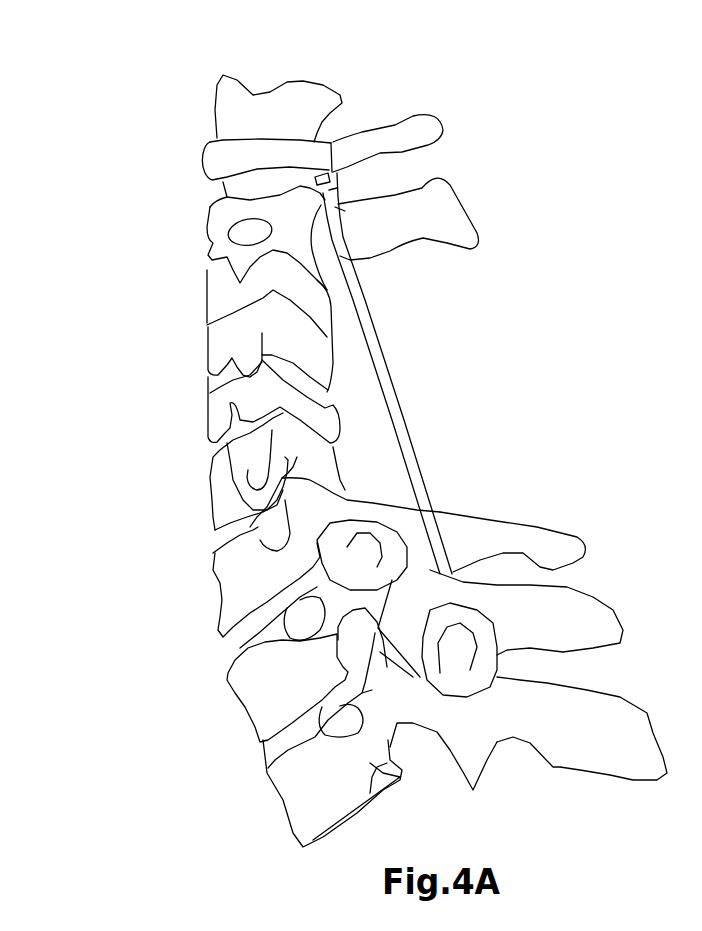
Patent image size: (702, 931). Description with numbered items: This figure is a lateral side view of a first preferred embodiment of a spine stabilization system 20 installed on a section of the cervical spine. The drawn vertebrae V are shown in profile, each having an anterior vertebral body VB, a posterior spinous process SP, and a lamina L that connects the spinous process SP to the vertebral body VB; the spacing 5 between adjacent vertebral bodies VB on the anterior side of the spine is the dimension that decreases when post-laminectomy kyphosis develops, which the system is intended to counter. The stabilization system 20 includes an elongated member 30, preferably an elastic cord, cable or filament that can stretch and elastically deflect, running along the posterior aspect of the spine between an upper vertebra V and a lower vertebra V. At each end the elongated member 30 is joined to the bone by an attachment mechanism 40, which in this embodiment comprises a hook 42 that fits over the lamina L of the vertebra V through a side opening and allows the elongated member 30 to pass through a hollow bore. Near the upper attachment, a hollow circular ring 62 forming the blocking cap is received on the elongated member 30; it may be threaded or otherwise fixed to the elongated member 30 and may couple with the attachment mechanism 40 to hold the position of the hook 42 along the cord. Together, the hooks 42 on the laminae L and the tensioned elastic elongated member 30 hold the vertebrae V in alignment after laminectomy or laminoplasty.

The spine stabilization system 20 is at (417, 308).
The elongated member 30 is at (417, 483).
The hollow circular ring 62 is at (336, 172).
The hook 42 is at (338, 192).
The attachment mechanism 40 is at (440, 136).
The spacing 5 is at (210, 262).
The vertebra V is at (217, 240).
The vertebral body VB is at (220, 220).
The spinous process SP is at (430, 215).
The lamina L is at (412, 612).